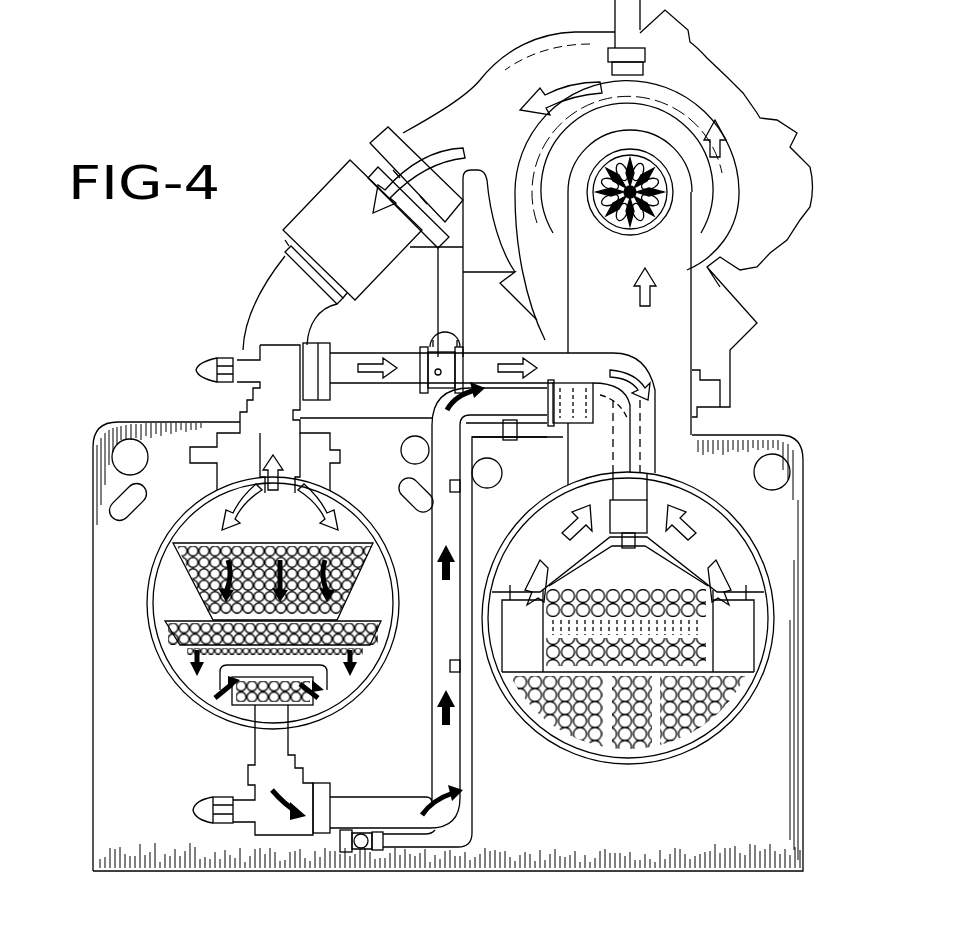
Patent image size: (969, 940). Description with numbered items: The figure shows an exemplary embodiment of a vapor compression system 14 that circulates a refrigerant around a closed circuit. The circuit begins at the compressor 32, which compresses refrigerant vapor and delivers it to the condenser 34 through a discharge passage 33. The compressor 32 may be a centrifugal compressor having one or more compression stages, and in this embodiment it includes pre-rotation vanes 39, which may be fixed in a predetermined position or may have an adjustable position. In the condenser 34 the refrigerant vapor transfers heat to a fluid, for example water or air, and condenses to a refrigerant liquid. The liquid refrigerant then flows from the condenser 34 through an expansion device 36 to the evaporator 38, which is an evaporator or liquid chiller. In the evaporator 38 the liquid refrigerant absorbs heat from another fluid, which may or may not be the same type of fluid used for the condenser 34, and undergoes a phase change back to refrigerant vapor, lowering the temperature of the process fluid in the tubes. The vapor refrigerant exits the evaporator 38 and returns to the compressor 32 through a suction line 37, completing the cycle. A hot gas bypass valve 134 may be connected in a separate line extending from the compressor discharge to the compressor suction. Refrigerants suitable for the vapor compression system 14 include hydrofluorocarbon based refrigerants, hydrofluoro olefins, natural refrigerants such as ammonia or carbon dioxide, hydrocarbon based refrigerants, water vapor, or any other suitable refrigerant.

The vapor compression system 14 is at (288, 110).
The compressor 32 is at (545, 70).
The pre-rotation vanes 39 is at (660, 195).
The suction line 37 is at (650, 250).
The expansion device 36 is at (560, 395).
The hot gas bypass valve 134 is at (434, 370).
The discharge passage 33 is at (281, 304).
The condenser 34 is at (155, 588).
The evaporator 38 is at (762, 560).